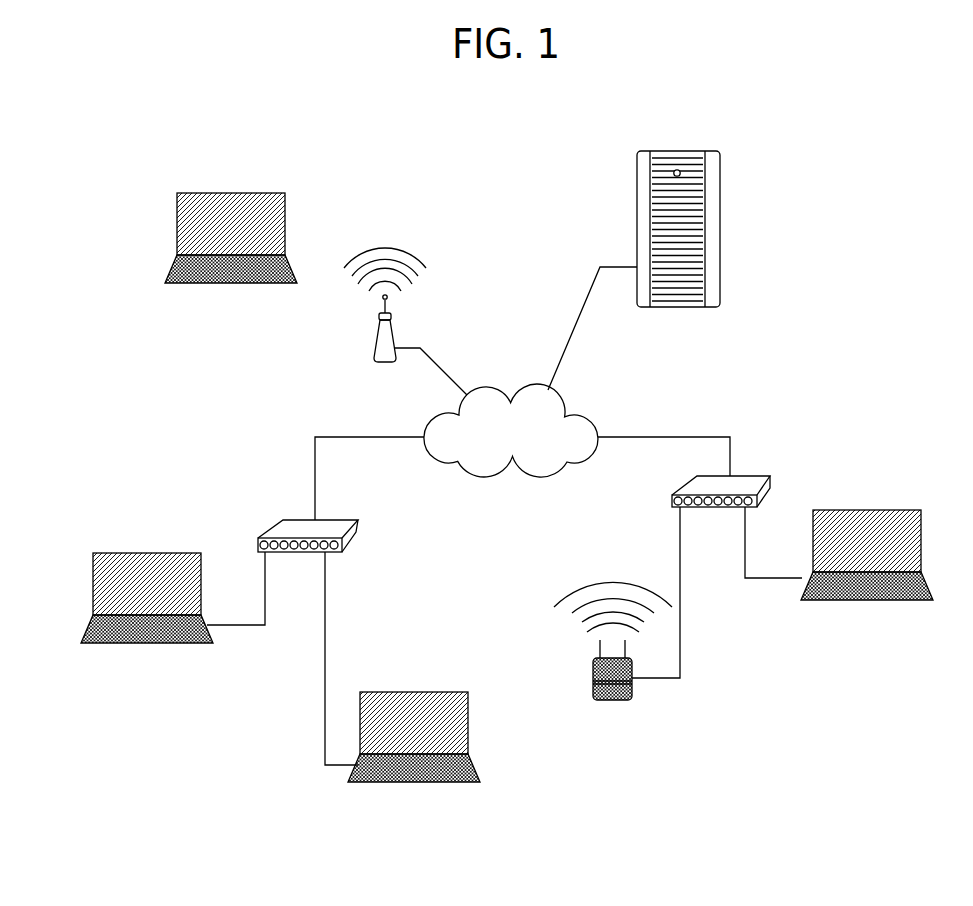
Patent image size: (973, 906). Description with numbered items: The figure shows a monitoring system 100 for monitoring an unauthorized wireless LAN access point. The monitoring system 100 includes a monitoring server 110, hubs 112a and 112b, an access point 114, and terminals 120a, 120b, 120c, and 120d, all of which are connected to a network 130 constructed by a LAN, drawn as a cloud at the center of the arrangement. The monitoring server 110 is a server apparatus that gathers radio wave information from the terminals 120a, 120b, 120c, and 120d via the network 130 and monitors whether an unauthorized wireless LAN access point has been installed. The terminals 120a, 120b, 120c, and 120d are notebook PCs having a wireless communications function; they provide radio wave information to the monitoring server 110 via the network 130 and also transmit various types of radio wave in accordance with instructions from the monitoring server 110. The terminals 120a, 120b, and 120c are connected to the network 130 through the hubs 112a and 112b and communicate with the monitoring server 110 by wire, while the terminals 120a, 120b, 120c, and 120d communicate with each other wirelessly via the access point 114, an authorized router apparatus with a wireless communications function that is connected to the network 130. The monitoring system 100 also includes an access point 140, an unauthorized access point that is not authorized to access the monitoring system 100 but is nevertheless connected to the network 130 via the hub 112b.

The monitoring system 100 is at (878, 113).
The monitoring server 110 is at (678, 151).
The hub 112a is at (326, 518).
The hub 112b is at (748, 475).
The access point 114 is at (394, 330).
The terminal 120a is at (148, 553).
The terminal 120b is at (418, 692).
The terminal 120c is at (868, 510).
The terminal 120d is at (232, 192).
The network 130 is at (497, 390).
The access point 140 is at (607, 700).